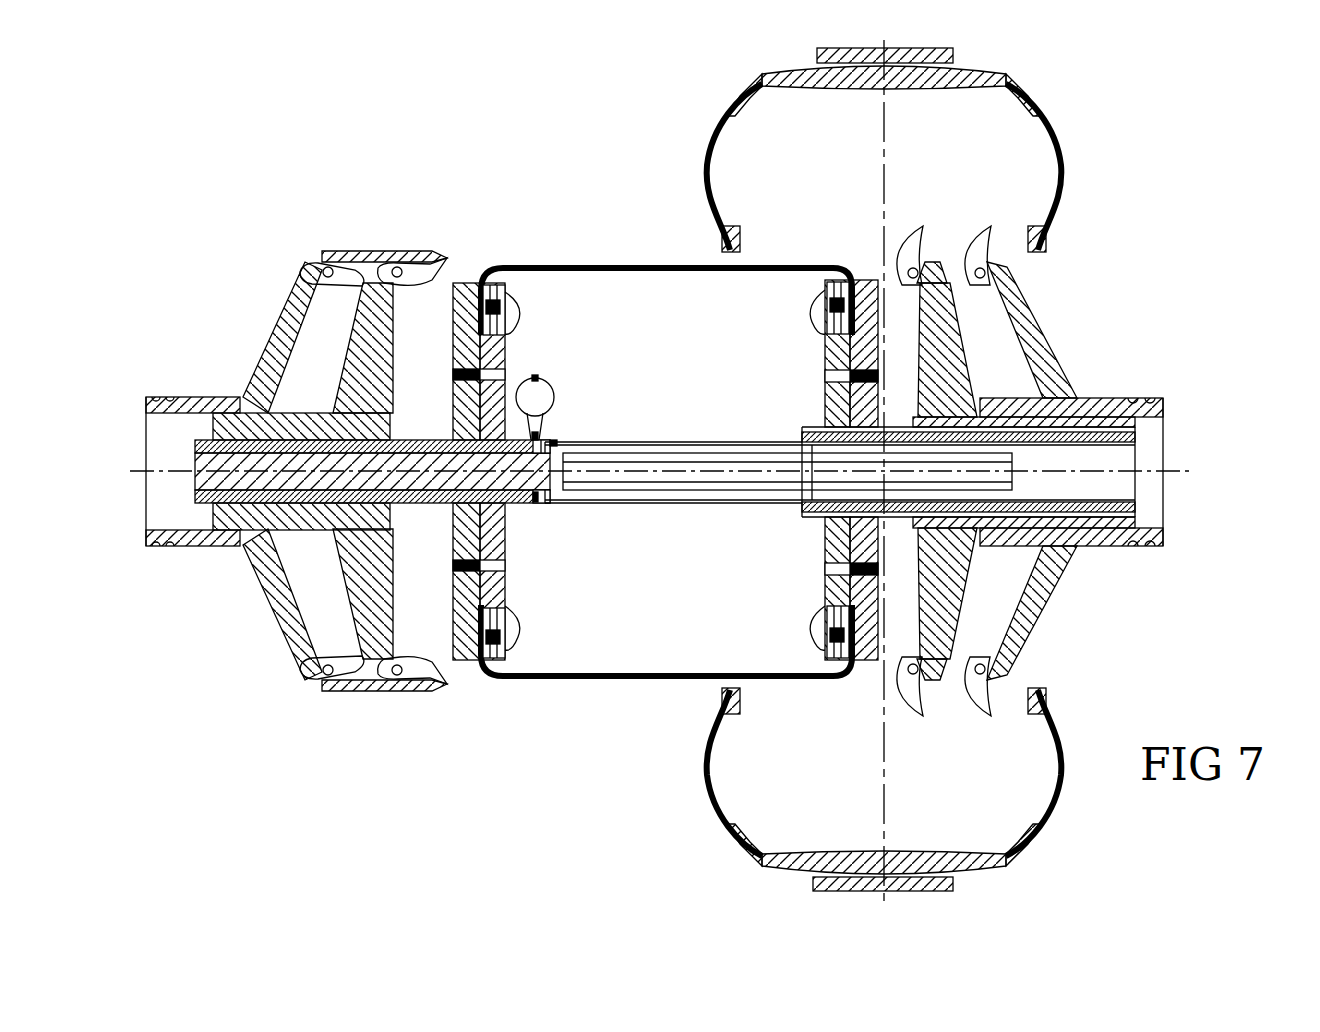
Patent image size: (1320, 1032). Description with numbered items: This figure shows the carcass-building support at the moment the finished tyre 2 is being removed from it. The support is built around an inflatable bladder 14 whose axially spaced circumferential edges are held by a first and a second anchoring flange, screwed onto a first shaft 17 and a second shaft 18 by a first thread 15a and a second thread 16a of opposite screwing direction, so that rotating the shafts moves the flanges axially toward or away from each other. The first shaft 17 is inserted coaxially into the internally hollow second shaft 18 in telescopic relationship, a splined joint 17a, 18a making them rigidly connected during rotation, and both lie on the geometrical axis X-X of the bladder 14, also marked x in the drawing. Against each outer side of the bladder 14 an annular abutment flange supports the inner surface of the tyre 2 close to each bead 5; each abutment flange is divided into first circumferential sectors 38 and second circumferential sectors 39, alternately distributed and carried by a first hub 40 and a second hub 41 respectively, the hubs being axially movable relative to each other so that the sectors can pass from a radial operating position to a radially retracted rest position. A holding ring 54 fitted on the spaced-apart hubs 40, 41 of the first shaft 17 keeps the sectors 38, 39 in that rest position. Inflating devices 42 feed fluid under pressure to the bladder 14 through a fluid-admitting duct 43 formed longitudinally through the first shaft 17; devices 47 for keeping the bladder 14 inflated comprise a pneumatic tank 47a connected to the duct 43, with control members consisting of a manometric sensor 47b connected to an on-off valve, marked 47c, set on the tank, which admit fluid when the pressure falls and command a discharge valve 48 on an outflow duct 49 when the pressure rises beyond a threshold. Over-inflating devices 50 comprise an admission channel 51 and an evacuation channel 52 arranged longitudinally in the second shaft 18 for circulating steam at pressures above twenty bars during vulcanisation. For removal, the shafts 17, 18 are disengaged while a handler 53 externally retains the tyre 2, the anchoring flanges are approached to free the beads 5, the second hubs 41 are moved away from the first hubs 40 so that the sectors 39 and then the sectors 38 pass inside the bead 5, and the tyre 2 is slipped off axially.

The tyre 2 is at (1058, 130).
The bead 5 is at (722, 243).
The inflatable bladder 14 is at (792, 266).
The first thread 15a is at (413, 440).
The second thread 16a is at (800, 423).
The first shaft 17 is at (200, 477).
The splined joint 17a is at (661, 492).
The second shaft 18 is at (1158, 505).
The splined joint 18a is at (830, 494).
The first circumferential sectors 38 is at (423, 268).
The second circumferential sectors 39 is at (347, 275).
The first hub 40 is at (357, 580).
The second hub 41 is at (277, 618).
The inflating devices 42 is at (205, 497).
The fluid-admitting duct 43 is at (197, 446).
The sensor bulb assembly 47 is at (623, 370).
The pneumatic tank 47a is at (553, 392).
The manometric sensor 47b is at (556, 441).
The bulb tip 47c is at (535, 378).
The discharge valve 48 is at (535, 503).
The outflow duct 49 is at (415, 517).
The over-inflating devices 50 is at (1130, 412).
The admission channel 51 is at (1102, 432).
The evacuation channel 52 is at (1112, 528).
The handler 53 is at (955, 55).
The holding ring 54 is at (378, 256).
The distance x is at (245, 465).
The geometrical axis X is at (1170, 473).